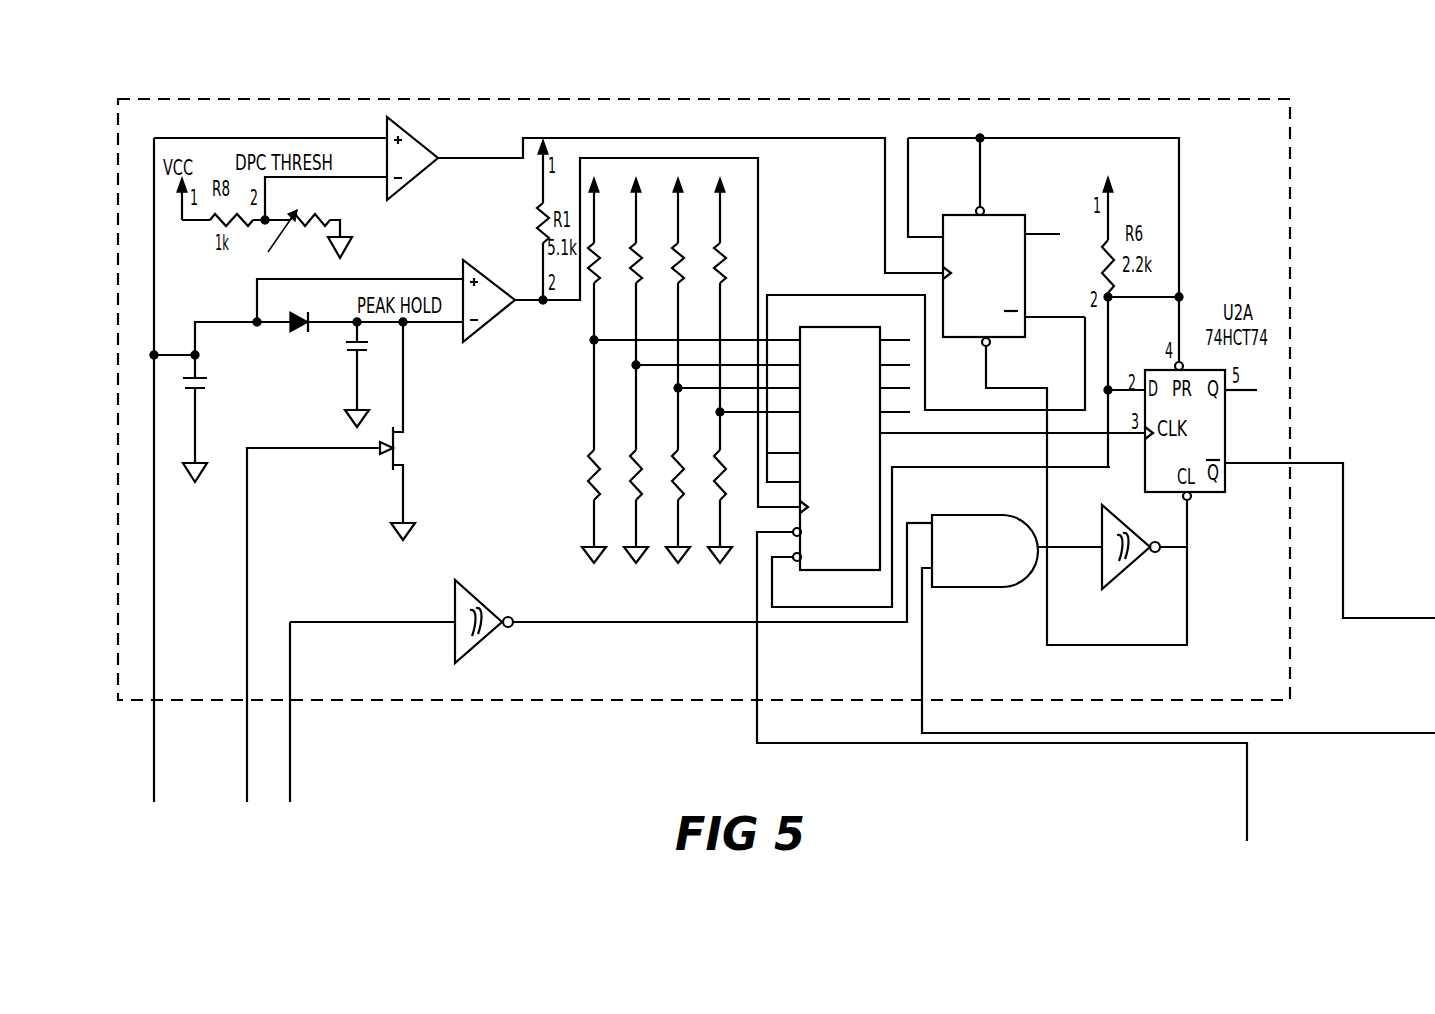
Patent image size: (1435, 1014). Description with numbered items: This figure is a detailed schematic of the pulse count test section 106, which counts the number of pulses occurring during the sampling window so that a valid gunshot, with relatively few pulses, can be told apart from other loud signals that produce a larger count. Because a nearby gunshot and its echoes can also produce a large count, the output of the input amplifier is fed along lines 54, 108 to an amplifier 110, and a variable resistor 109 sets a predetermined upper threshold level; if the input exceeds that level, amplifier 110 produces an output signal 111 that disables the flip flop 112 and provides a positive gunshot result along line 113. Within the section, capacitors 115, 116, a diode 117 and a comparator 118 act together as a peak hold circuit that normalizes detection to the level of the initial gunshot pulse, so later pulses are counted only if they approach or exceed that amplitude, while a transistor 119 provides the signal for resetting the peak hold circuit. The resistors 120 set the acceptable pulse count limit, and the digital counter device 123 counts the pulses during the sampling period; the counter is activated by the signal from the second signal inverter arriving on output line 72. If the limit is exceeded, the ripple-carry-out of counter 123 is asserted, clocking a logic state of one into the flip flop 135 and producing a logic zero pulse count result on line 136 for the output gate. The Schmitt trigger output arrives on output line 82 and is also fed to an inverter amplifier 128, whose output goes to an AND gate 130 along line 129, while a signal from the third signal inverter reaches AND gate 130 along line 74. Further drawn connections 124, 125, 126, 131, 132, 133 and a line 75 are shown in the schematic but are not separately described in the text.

The pulse count test section 106 is at (303, 97).
The line 108 is at (330, 138).
The variable resistor 109 is at (297, 222).
The amplifier 110 is at (440, 150).
The output signal 111 is at (583, 138).
The flip flop 112 is at (1025, 262).
The line 113 is at (1000, 138).
The capacitor 115 is at (200, 395).
The capacitor 116 is at (366, 332).
The diode 117 is at (283, 330).
The comparator 118 is at (490, 322).
The transistor 119 is at (388, 463).
The resistors 120 is at (593, 378).
The digital counter device 123 is at (824, 328).
The count enable line 124 is at (795, 295).
The clear line 125 is at (935, 468).
The ripple carry output line 126 is at (985, 434).
The inverter amplifier 128 is at (490, 634).
The line 129 is at (678, 623).
The AND gate 130 is at (1000, 590).
The AND gate output line 131 is at (1058, 547).
The inverter U6C 132 is at (1115, 521).
The start pulse line 133 is at (1160, 645).
The flip flop 135 is at (1192, 500).
The line 136 is at (1238, 464).
The line 54 is at (154, 755).
The output line 72 is at (757, 628).
The line 74 is at (922, 645).
The input line 75 is at (247, 740).
The output line 82 is at (290, 720).